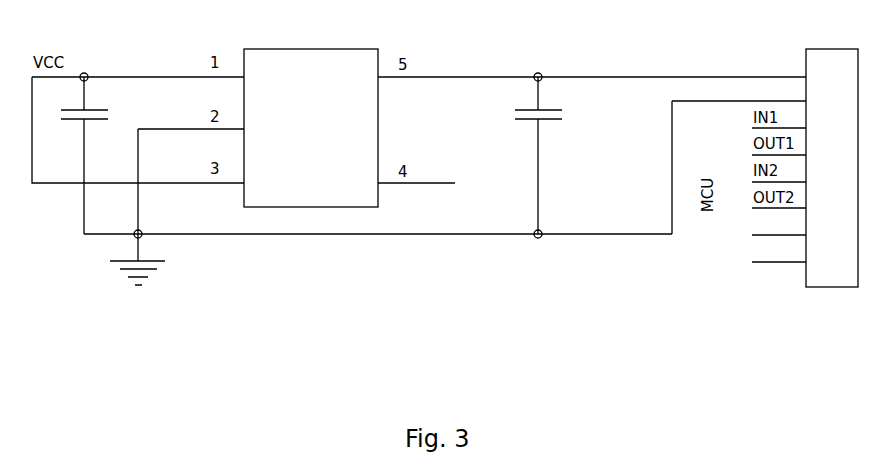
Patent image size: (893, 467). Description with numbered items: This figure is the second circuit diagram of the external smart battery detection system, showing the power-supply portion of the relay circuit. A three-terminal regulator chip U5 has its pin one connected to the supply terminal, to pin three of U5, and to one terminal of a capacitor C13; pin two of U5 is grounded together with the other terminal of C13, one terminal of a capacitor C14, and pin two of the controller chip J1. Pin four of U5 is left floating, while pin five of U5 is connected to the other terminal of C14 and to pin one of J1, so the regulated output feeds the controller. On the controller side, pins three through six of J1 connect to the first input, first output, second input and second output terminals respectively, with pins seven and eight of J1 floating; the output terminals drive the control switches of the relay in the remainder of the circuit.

The capacitor C13 is at (99, 155).
The capacitor C14 is at (555, 155).
The three-terminal regulator chip U5 is at (341, 115).
The MCU controller chip J1 is at (805, 157).